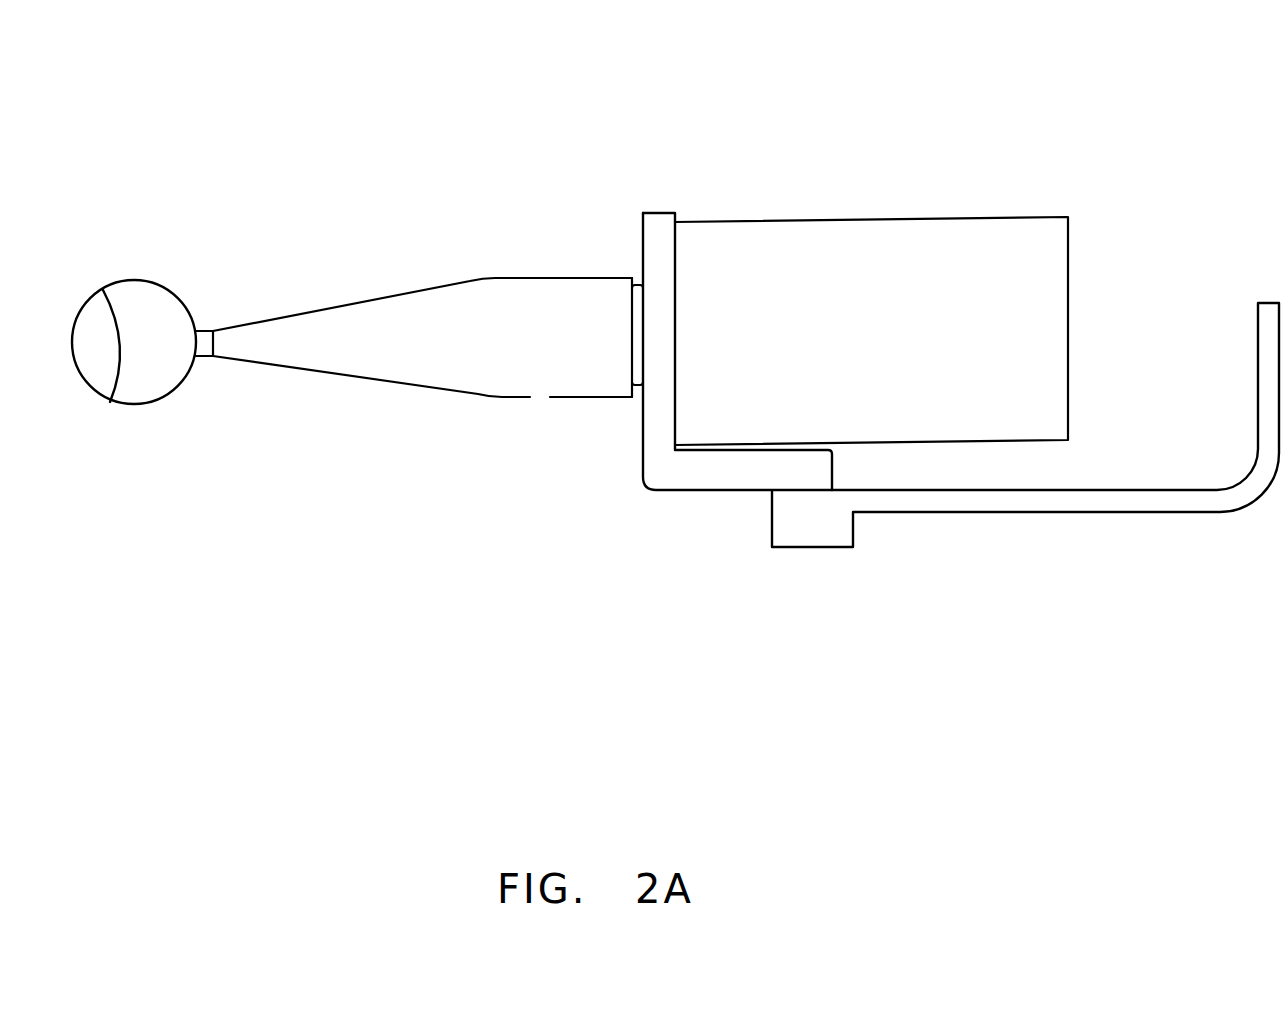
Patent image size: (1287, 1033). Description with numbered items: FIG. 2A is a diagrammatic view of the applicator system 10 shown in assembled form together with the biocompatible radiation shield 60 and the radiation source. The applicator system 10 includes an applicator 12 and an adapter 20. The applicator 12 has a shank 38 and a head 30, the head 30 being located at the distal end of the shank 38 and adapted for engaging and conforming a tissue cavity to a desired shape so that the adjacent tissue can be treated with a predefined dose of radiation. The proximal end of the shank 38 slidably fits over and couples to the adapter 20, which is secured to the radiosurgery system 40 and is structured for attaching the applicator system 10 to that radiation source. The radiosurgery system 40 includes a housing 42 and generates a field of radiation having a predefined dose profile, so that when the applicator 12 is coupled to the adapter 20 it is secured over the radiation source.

The applicator system 10 is at (443, 107).
The applicator 12 is at (390, 453).
The adapter 20 is at (650, 475).
The head 30 is at (145, 300).
The shank 38 is at (307, 362).
The radiosurgery system 40 is at (910, 150).
The housing 42 is at (1003, 235).
The biocompatible radiation shield 60 is at (97, 385).